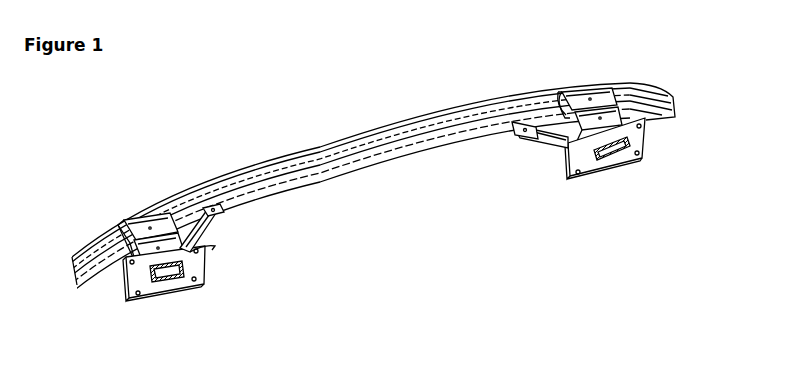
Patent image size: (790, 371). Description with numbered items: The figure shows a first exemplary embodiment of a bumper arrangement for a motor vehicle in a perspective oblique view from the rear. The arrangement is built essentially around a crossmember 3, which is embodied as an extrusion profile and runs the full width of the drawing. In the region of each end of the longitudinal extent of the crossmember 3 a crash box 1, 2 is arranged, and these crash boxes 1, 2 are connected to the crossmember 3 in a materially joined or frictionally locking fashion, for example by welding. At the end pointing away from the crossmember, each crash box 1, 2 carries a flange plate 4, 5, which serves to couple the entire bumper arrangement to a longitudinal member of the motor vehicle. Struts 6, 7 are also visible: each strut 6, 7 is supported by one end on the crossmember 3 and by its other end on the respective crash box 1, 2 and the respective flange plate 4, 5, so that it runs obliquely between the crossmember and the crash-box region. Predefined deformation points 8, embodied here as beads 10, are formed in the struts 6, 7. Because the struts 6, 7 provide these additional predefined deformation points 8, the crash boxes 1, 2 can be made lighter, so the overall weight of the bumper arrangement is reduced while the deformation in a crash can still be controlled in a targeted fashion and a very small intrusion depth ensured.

The crash box 1 is at (607, 90).
The crash box 2 is at (128, 224).
The crossmember 3 is at (357, 137).
The flange plate 4 is at (613, 162).
The flange plate 5 is at (160, 287).
The strut 6 is at (552, 140).
The strut 7 is at (212, 247).
The predefined deformation point 8 is at (207, 225).
The bead 10 is at (537, 135).